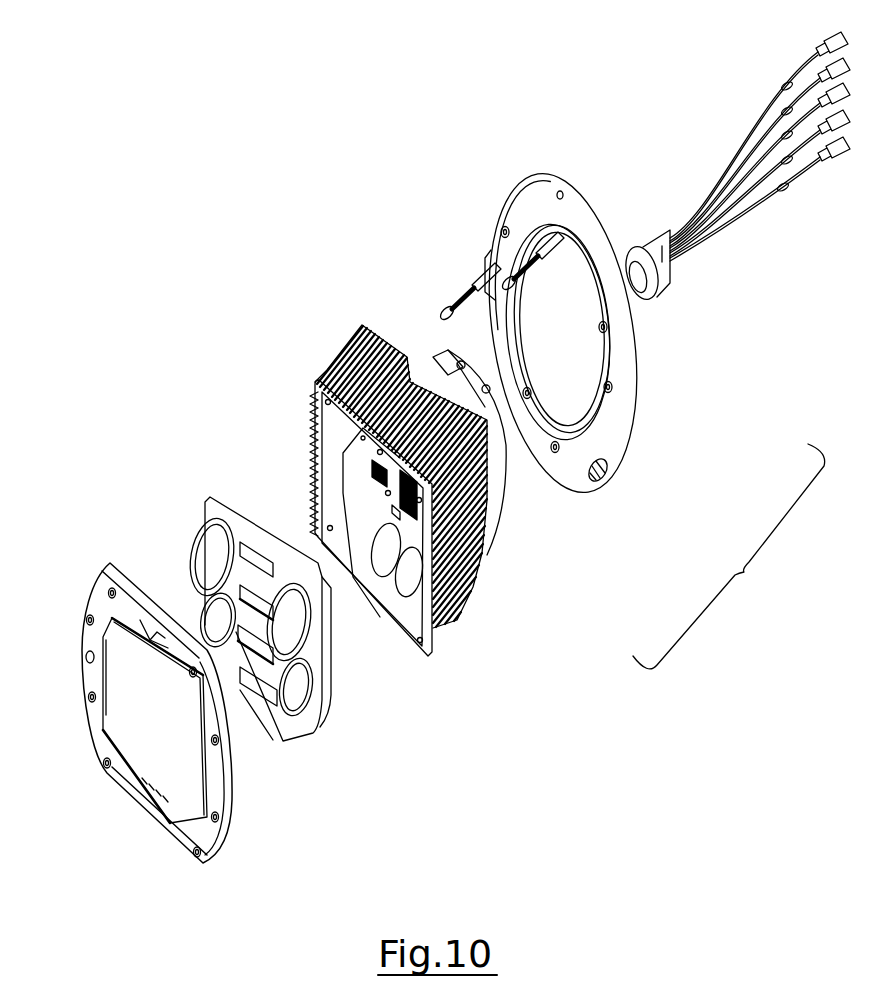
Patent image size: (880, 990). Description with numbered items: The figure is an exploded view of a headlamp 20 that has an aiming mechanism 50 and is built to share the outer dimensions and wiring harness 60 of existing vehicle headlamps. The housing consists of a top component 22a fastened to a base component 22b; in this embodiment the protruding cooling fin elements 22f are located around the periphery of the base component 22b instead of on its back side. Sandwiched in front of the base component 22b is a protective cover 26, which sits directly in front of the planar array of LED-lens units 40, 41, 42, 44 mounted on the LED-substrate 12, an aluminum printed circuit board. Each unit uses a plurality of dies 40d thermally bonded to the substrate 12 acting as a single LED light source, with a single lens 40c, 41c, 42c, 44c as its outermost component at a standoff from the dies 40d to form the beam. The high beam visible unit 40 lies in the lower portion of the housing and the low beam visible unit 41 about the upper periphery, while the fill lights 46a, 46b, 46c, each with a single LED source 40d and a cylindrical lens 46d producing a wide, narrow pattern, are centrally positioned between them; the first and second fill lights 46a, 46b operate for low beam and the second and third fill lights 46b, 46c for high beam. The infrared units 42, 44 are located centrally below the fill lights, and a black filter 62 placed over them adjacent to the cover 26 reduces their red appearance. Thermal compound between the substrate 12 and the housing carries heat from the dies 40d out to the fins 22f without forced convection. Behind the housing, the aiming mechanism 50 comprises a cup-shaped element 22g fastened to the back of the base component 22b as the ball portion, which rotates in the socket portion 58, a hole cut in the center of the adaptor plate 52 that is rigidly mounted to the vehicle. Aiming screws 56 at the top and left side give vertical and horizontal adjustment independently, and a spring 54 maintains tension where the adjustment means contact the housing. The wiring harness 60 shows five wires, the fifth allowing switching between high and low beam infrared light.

The headlamp 20 is at (623, 747).
The top component 22a is at (160, 823).
The base component 22b is at (320, 372).
The protruding cooling fin elements 22f is at (376, 330).
The cup-shaped element (ball portion) 22g is at (497, 478).
The protective cover 26 is at (200, 790).
The high beam visible light LED-lens unit 40 is at (203, 607).
The lens 40c is at (300, 717).
The dies 40d is at (410, 513).
The low beam visible light LED-lens unit 41 is at (197, 532).
The lens 41c is at (307, 662).
The IR LED-lens unit 42 is at (370, 527).
The lens 42c is at (425, 573).
The IR LED-lens unit 44 is at (415, 600).
The lens 44c is at (423, 587).
The first fill light 46a is at (248, 555).
The second fill light 46b is at (265, 612).
The third fill light 46c is at (275, 737).
The cylindrical lens 46d is at (303, 643).
The LED-substrate 12 is at (378, 450).
The aiming mechanism 50 is at (741, 350).
The adaptor plate 52 is at (637, 385).
The spring 54 is at (607, 480).
The aiming screws 56 is at (457, 285).
The socket portion 58 is at (563, 318).
The wiring harness 60 is at (657, 232).
The black filter 62 is at (310, 738).